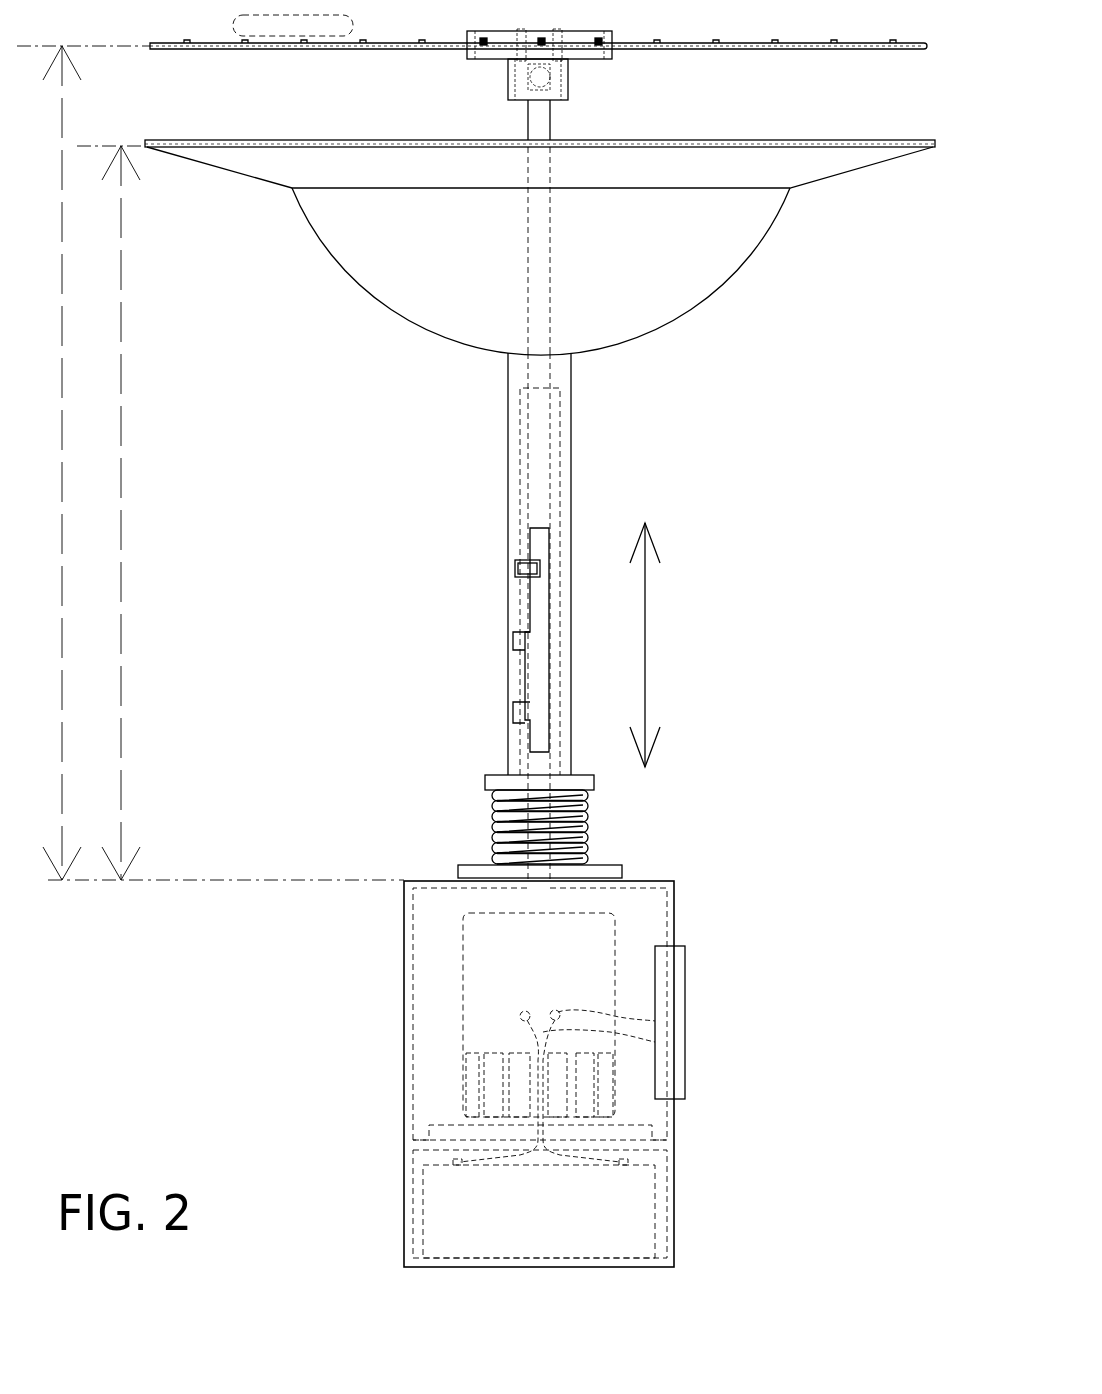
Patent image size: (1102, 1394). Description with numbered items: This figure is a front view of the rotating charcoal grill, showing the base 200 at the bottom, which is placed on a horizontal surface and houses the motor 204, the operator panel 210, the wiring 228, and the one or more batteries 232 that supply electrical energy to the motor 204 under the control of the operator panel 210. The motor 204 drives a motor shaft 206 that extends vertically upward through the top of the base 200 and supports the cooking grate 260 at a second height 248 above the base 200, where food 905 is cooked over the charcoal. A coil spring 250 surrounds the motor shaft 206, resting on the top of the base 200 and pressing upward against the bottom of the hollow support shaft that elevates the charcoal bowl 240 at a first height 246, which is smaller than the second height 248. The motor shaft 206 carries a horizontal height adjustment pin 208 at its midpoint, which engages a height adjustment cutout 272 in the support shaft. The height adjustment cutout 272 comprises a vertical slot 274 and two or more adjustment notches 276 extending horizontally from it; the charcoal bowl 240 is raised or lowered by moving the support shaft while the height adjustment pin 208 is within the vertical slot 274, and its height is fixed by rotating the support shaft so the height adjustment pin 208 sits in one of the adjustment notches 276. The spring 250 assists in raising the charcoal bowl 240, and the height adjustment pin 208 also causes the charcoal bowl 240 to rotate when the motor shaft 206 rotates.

The base 200 is at (328, 887).
The motor 204 is at (617, 920).
The motor shaft 206 is at (552, 450).
The height adjustment pin 208 is at (522, 577).
The operator panel 210 is at (683, 1082).
The wiring 228 is at (632, 1015).
The one or more batteries 232 is at (657, 1215).
The charcoal bowl 240 is at (735, 270).
The first height 246 is at (123, 514).
The second height 248 is at (65, 352).
The spring 250 is at (588, 826).
The cooking grate 260 is at (690, 44).
The height adjustment cutout 272 is at (551, 537).
The vertical slot 274 is at (543, 683).
The adjustment notches 276 is at (518, 643).
The food 905 is at (353, 26).